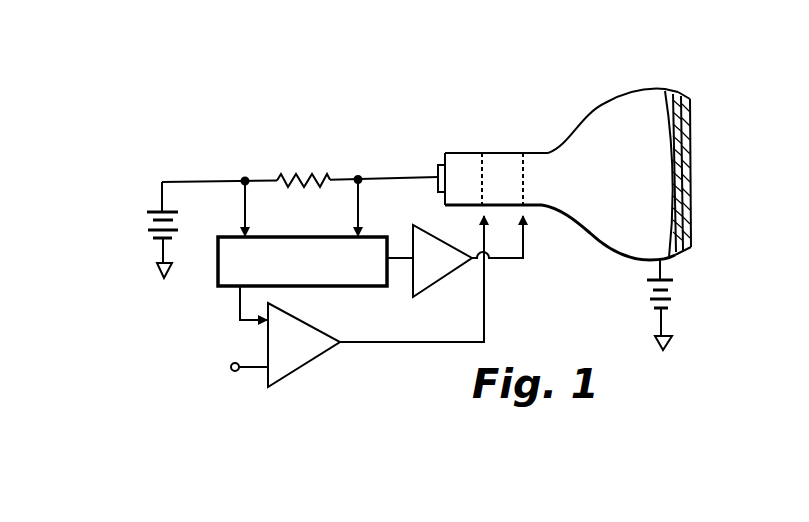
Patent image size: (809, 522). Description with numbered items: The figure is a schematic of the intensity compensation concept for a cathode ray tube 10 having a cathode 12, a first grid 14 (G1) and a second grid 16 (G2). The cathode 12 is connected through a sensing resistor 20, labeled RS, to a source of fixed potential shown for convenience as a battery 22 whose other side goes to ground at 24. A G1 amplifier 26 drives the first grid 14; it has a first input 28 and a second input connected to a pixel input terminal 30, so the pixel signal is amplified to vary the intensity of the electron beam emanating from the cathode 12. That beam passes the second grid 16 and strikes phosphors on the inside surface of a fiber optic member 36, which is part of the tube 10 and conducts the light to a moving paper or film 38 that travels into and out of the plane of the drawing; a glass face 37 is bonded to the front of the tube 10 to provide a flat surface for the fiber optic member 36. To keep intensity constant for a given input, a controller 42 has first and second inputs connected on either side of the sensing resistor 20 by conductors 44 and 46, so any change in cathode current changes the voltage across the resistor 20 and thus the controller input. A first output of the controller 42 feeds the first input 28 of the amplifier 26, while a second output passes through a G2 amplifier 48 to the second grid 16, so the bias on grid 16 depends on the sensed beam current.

The cathode ray tube 10 is at (592, 233).
The cathode 12 is at (438, 173).
The first grid 14 is at (482, 172).
The second grid 16 is at (525, 175).
The resistor 20 is at (299, 173).
The battery 22 is at (178, 231).
The ground 24 is at (171, 266).
The G1 amplifier 26 is at (320, 366).
The first input 28 is at (240, 322).
The pixel input terminal 30 is at (234, 372).
The fiber optic member 36 is at (692, 140).
The glass face 37 is at (677, 95).
The film 38 is at (692, 168).
The controller 42 is at (316, 287).
The conductor 44 is at (246, 223).
The conductor 46 is at (362, 214).
The G2 amplifier 48 is at (447, 284).